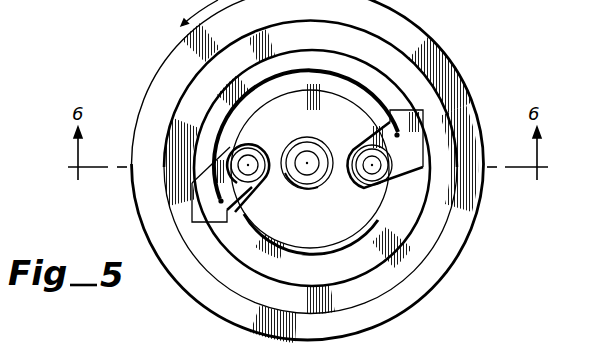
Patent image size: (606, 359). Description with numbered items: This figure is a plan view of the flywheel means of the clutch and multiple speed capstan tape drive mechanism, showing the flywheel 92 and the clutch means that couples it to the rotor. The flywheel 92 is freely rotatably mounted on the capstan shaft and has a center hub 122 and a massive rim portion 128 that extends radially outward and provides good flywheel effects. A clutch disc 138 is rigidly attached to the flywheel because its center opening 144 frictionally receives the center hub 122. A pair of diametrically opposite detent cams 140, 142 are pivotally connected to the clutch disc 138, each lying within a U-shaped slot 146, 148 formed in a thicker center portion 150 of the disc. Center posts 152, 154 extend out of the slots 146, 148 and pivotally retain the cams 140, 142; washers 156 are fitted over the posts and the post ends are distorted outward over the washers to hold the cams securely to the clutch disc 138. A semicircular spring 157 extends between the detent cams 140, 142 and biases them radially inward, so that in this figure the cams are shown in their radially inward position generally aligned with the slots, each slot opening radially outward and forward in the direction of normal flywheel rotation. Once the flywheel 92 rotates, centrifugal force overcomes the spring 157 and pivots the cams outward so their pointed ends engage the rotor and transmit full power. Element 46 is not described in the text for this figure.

The pawl 46 is at (228, 218).
The flywheel 92 is at (466, 250).
The center hub 122 is at (315, 189).
The rim portion 128 is at (413, 283).
The clutch disc 138 is at (384, 62).
The detent cam 140 is at (192, 206).
The detent cam 142 is at (415, 127).
The center opening 144 is at (312, 190).
The slot 146 is at (250, 142).
The slot 148 is at (314, 88).
The thicker center portion 150 is at (310, 247).
The center post 152 is at (247, 188).
The center post 154 is at (376, 180).
The washer 156 is at (352, 212).
The semicircular spring 157 is at (318, 70).